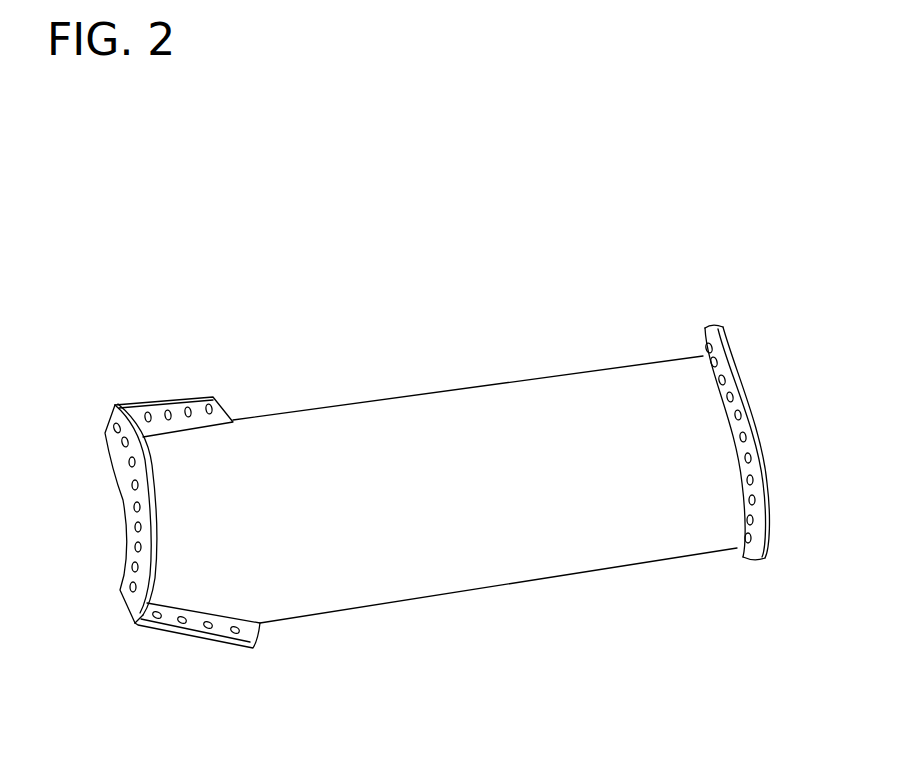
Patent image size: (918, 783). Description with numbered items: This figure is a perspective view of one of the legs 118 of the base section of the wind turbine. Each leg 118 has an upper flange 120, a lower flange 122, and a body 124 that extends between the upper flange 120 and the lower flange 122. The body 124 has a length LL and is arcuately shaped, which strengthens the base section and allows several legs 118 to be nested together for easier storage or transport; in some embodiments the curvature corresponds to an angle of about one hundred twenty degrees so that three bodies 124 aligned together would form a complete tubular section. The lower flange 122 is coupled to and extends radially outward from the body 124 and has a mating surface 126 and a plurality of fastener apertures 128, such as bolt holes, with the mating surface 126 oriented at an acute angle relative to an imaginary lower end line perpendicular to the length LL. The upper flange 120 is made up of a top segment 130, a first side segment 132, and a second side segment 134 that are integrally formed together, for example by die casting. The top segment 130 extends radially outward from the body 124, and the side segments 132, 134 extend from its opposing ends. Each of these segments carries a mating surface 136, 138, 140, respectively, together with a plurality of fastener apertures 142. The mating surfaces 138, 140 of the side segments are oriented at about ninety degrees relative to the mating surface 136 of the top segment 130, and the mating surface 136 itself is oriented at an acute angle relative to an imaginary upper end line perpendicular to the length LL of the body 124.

The leg 118 is at (340, 203).
The upper flange 120 is at (82, 530).
The lower flange 122 is at (776, 496).
The body 124 is at (455, 388).
The mating surface 126 is at (776, 432).
The fastener apertures 128 is at (740, 423).
The top segment 130 is at (82, 485).
The first side segment 132 is at (239, 677).
The second side segment 134 is at (193, 380).
The mating surface 136 is at (128, 557).
The mating surface 138 is at (172, 625).
The mating surface 140 is at (137, 402).
The fastener apertures 142 is at (128, 462).